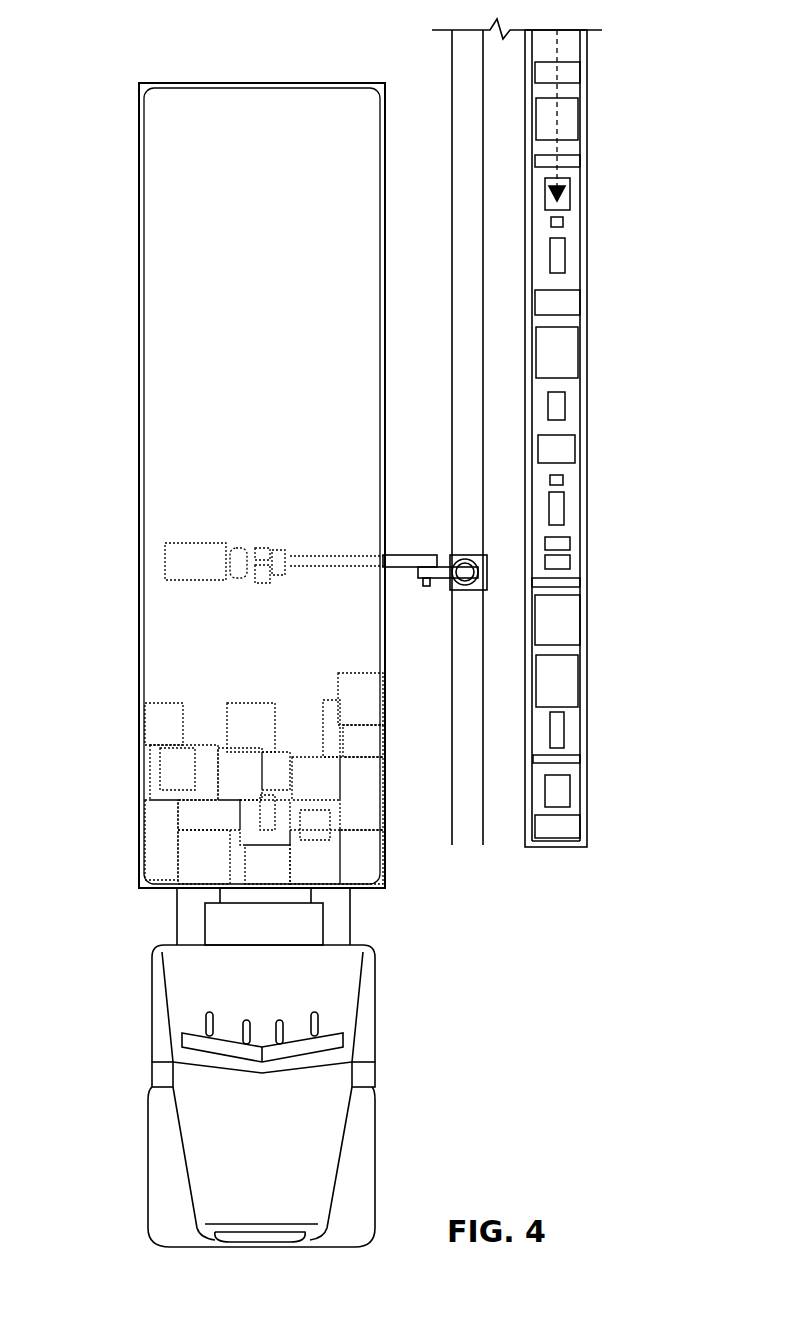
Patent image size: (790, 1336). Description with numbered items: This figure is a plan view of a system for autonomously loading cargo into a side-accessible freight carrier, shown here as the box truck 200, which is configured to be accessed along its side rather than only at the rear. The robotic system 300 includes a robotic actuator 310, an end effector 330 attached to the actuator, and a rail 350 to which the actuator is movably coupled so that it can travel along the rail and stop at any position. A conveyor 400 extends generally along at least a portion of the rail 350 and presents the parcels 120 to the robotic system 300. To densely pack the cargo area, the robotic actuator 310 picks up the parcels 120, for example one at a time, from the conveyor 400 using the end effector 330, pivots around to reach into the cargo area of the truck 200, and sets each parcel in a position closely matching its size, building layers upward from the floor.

The parcels 120 is at (572, 116).
The box truck 200 is at (403, 990).
The robotic system 300 is at (398, 534).
The robotic actuator 310 is at (437, 600).
The end effector 330 is at (176, 532).
The rail 350 is at (452, 68).
The conveyor 400 is at (587, 190).